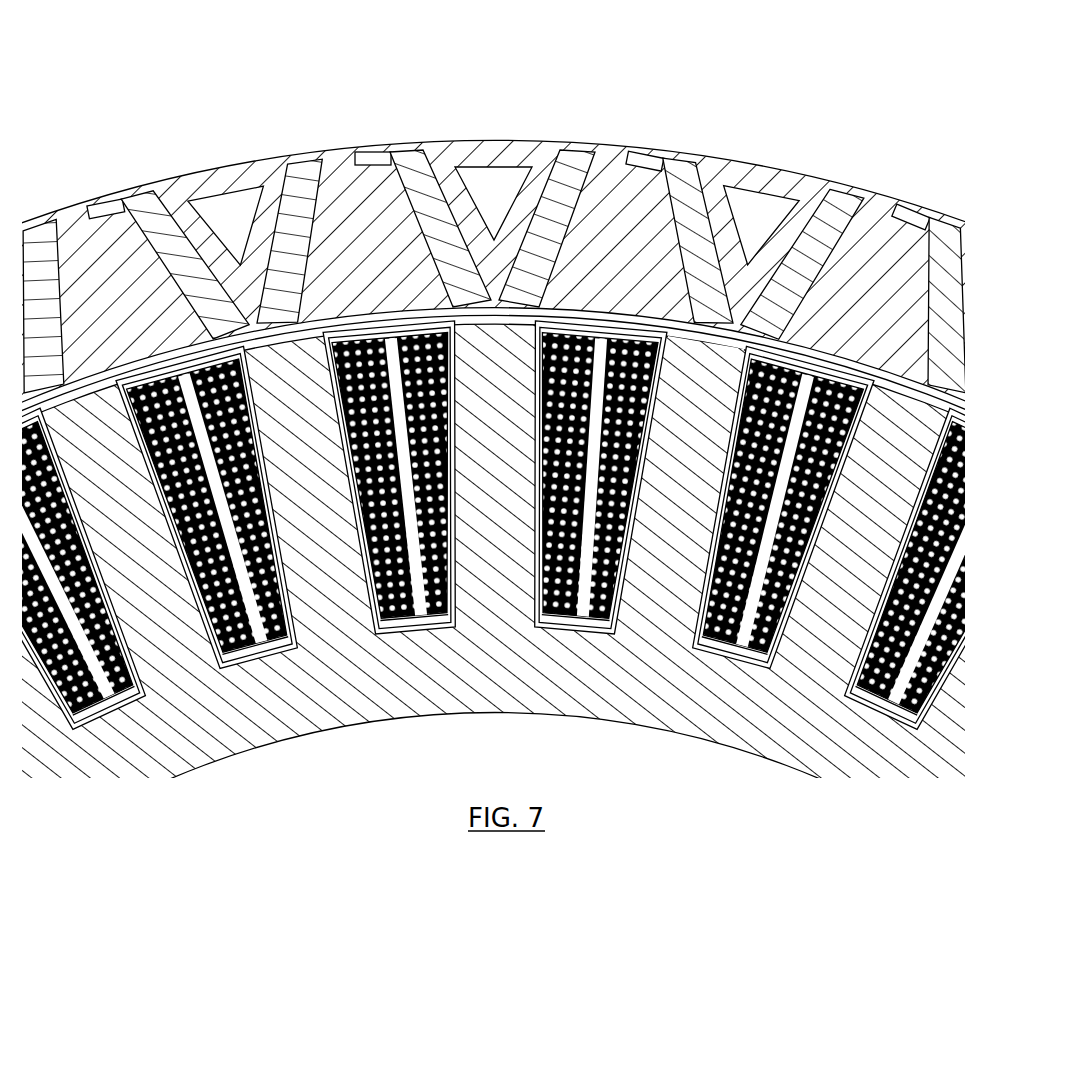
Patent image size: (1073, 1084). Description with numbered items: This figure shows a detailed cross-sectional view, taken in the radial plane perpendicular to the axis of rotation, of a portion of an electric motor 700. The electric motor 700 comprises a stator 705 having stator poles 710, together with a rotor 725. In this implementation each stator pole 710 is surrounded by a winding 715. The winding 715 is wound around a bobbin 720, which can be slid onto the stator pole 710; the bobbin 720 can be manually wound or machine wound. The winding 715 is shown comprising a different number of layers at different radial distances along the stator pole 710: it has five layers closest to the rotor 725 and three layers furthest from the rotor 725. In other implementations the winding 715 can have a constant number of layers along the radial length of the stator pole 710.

The electric motor 700 is at (536, 472).
The stator 705 is at (536, 615).
The stator pole 710 is at (681, 540).
The winding 715 is at (532, 582).
The bobbin 720 is at (590, 540).
The rotor 725 is at (700, 157).